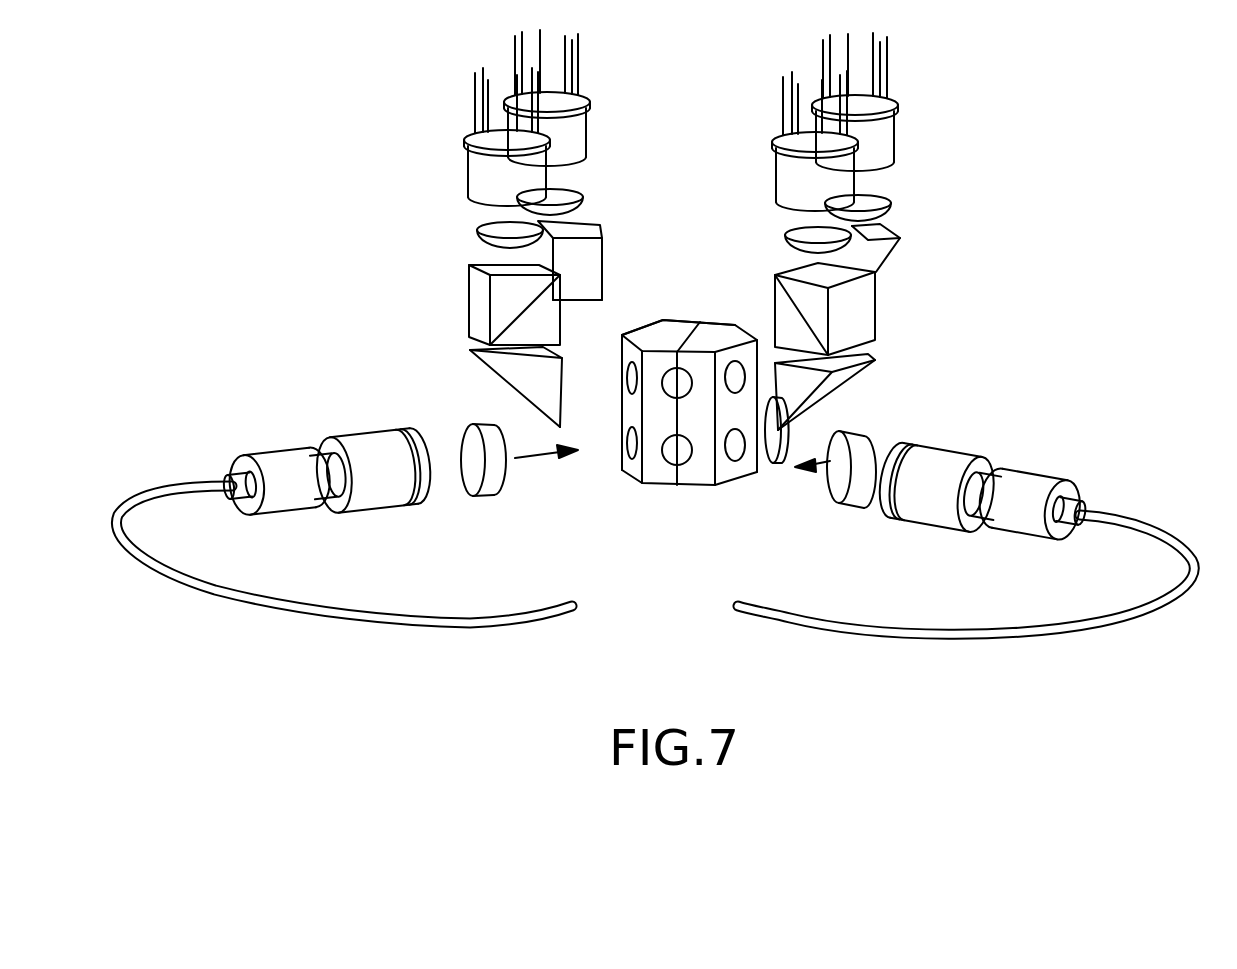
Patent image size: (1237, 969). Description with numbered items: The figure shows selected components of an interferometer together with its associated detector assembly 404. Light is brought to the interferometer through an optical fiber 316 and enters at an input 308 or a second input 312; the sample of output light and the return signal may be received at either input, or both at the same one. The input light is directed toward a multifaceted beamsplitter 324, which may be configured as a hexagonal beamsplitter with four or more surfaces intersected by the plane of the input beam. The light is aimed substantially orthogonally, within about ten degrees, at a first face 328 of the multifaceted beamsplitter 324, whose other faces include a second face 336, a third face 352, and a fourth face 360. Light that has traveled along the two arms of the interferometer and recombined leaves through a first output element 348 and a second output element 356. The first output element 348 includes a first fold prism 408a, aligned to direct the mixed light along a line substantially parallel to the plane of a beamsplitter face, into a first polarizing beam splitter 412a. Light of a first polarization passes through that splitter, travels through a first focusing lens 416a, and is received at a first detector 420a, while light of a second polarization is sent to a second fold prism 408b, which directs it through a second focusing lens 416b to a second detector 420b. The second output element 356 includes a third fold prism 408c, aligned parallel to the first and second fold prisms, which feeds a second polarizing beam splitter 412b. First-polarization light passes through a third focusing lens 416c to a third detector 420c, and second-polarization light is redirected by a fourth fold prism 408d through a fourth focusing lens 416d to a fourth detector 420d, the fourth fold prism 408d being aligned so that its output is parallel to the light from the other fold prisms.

The input 308 is at (1043, 488).
The second input 312 is at (275, 462).
The optical fiber 316 is at (165, 497).
The multifaceted beamsplitter 324 is at (682, 422).
The first face 328 is at (732, 477).
The second face 336 is at (652, 322).
The first output element 348 is at (862, 378).
The third face 352 is at (633, 470).
The second output element 356 is at (490, 365).
The fourth face 360 is at (750, 330).
The detector assembly 404 is at (1072, 196).
The first fold prism 408a is at (910, 385).
The second fold prism 408b is at (585, 272).
The third fold prism 408c is at (465, 377).
The fourth fold prism 408d is at (893, 245).
The first polarizing beam splitter 412a is at (868, 298).
The second polarizing beam splitter 412b is at (477, 290).
The first focusing lens 416a is at (783, 228).
The second focusing lens 416b is at (573, 189).
The third focusing lens 416c is at (480, 232).
The fourth focusing lens 416d is at (893, 193).
The first detector 420a is at (792, 177).
The second detector 420b is at (582, 127).
The third detector 420c is at (478, 156).
The fourth detector 420d is at (883, 127).